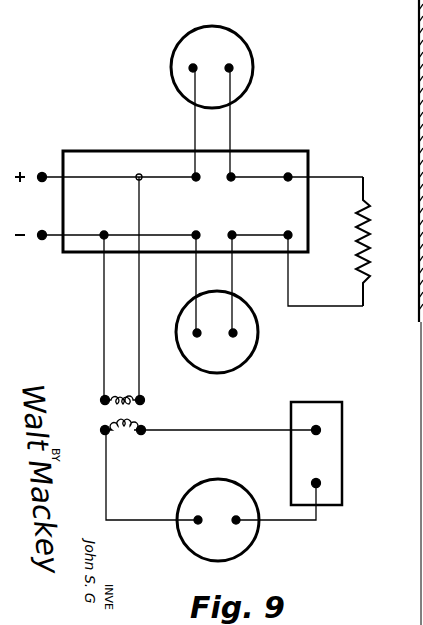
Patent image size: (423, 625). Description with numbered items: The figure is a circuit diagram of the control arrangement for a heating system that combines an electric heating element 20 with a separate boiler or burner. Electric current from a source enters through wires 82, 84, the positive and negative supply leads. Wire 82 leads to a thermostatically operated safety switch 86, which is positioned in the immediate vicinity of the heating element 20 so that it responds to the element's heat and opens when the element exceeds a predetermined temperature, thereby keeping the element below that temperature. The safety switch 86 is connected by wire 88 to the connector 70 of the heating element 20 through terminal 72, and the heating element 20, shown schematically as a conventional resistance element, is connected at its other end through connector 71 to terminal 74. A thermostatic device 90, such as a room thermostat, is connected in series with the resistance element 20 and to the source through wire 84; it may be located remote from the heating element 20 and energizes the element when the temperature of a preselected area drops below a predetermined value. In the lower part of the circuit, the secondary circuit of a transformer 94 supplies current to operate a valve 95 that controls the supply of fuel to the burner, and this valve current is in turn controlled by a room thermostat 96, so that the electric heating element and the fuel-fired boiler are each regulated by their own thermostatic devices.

The heating element 20 is at (371, 264).
The connector 70 is at (288, 181).
The connector 71 is at (288, 231).
The terminal 72 is at (231, 181).
The terminal 74 is at (231, 231).
The wire 82 is at (50, 177).
The wire 84 is at (50, 237).
The thermostatic safety switch 86 is at (253, 57).
The wire 88 is at (231, 125).
The thermostatic device 90 is at (256, 340).
The transformer 94 is at (116, 411).
The valve 95 is at (342, 470).
The room thermostat 96 is at (256, 540).